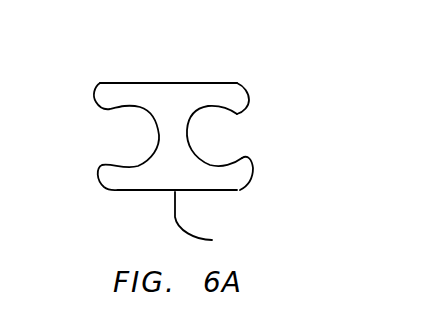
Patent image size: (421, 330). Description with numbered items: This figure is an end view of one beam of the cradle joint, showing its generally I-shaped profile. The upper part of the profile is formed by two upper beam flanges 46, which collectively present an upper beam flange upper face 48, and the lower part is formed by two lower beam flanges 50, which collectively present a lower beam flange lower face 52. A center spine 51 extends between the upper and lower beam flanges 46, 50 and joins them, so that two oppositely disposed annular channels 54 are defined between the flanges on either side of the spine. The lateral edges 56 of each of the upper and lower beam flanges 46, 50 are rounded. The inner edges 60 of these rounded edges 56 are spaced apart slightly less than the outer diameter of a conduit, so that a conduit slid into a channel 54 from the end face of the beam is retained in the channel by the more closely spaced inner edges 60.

The upper beam flanges 46 is at (120, 100).
The upper beam flange upper face 48 is at (177, 83).
The lower beam flanges 50 is at (120, 178).
The center spine 51 is at (175, 138).
The lower beam flange lower face 52 is at (211, 225).
The annular channels 54 is at (124, 137).
The lateral edges 56 is at (96, 104).
The inner edges 60 is at (237, 114).